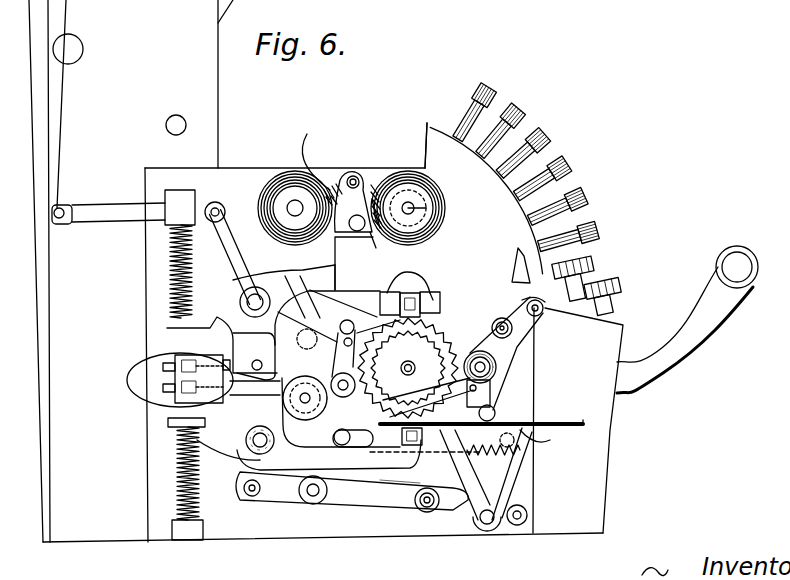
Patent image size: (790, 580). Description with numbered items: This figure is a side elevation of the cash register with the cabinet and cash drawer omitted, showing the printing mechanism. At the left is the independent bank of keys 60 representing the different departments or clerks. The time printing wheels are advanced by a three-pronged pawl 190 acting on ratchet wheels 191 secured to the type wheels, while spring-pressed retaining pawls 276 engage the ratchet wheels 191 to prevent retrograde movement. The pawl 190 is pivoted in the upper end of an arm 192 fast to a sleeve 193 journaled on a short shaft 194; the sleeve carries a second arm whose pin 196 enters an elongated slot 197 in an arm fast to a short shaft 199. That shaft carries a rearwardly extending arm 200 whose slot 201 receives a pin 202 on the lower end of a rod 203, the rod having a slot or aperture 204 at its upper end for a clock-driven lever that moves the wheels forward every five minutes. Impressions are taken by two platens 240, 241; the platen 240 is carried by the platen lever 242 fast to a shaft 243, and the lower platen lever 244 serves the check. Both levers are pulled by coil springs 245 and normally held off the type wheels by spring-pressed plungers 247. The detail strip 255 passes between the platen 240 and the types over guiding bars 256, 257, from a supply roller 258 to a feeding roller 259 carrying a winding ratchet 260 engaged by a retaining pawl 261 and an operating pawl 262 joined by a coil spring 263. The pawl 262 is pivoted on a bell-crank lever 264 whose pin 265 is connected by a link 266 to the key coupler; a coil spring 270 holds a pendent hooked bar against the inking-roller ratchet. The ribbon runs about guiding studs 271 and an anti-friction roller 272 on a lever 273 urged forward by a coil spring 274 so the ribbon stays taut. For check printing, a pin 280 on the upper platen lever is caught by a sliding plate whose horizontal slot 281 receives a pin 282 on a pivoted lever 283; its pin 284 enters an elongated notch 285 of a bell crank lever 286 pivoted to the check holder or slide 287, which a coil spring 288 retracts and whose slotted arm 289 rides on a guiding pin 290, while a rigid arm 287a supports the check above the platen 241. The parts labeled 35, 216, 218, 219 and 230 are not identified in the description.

The operating handle 35 is at (695, 333).
The independent bank of keys 60 is at (530, 117).
The three-pronged pawl 190 is at (330, 344).
The ratchet wheels 191 is at (408, 368).
The arm 192 is at (380, 305).
The sleeve 193 is at (270, 295).
The short shaft 194 is at (345, 397).
The pin 196 is at (296, 340).
The elongated slot 197 is at (340, 300).
The short shaft 199 is at (217, 202).
The rearwardly extending arm 200 is at (110, 200).
The elongated slot 201 is at (72, 224).
The pin 202 is at (77, 197).
The rod 203 is at (60, 105).
The slot or aperture 204 is at (582, 415).
The roller 216 is at (259, 429).
The roller pin 218 is at (266, 447).
The gear wheel 219 is at (307, 412).
The gear wheel 230 is at (305, 384).
The platen 240 is at (437, 282).
The platen 241 is at (407, 450).
The platen lever 242 is at (384, 344).
The shaft 243 is at (255, 312).
The lower platen lever 244 is at (228, 443).
The coil springs 245 is at (170, 258).
The spring-pressed plungers 247 is at (166, 380).
The detail strip 255 is at (433, 247).
The guiding bar 256 is at (440, 300).
The guiding bar 257 is at (387, 293).
The supply roller 258 is at (292, 205).
The feeding roller 259 is at (428, 209).
The winding ratchet 260 is at (427, 197).
The retaining pawl 261 is at (372, 240).
The operating pawl 262 is at (378, 175).
The coil spring 263 is at (354, 170).
The bell-crank lever 264 is at (340, 175).
The pin 265 is at (354, 263).
The link 266 is at (327, 263).
The coil spring 270 is at (316, 155).
The guiding studs 271 is at (496, 367).
The anti-friction roller 272 is at (543, 360).
The lever 273 is at (530, 337).
The coil spring 274 is at (502, 413).
The spring-pressed retaining pawls 276 is at (481, 415).
The pin 280 is at (253, 362).
The horizontal slot 281 is at (260, 497).
The pin 282 is at (250, 500).
The pivoted lever 283 is at (400, 503).
The pin 284 is at (427, 513).
The elongated notch 285 is at (453, 517).
The bell crank lever 286 is at (470, 480).
The check holder or slide 287 is at (548, 436).
The rigid arm 287a is at (460, 500).
The coil spring 288 is at (500, 472).
The slotted arm 289 is at (339, 492).
The guiding pin 290 is at (352, 503).